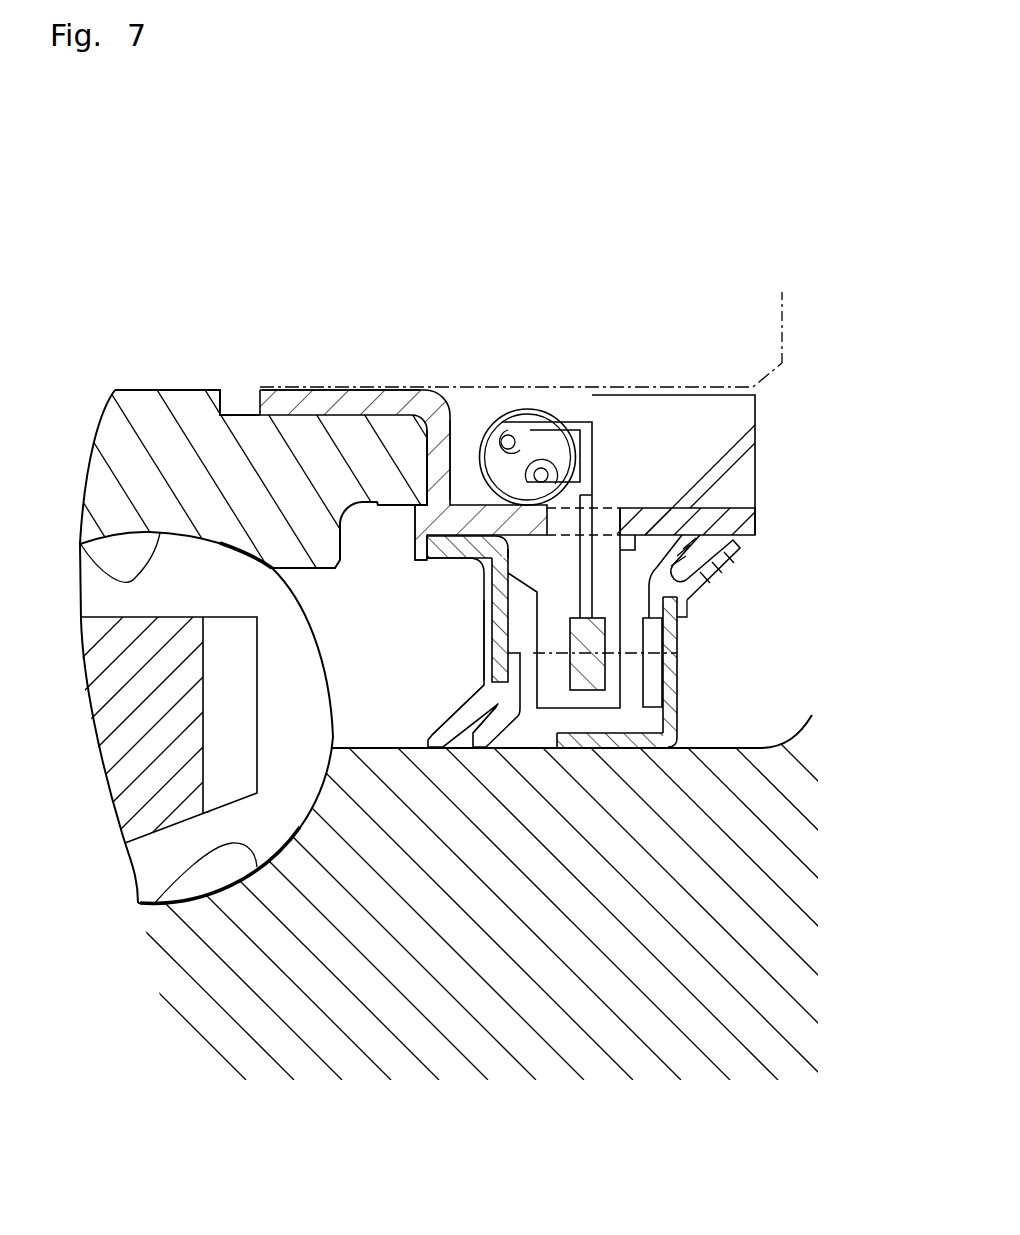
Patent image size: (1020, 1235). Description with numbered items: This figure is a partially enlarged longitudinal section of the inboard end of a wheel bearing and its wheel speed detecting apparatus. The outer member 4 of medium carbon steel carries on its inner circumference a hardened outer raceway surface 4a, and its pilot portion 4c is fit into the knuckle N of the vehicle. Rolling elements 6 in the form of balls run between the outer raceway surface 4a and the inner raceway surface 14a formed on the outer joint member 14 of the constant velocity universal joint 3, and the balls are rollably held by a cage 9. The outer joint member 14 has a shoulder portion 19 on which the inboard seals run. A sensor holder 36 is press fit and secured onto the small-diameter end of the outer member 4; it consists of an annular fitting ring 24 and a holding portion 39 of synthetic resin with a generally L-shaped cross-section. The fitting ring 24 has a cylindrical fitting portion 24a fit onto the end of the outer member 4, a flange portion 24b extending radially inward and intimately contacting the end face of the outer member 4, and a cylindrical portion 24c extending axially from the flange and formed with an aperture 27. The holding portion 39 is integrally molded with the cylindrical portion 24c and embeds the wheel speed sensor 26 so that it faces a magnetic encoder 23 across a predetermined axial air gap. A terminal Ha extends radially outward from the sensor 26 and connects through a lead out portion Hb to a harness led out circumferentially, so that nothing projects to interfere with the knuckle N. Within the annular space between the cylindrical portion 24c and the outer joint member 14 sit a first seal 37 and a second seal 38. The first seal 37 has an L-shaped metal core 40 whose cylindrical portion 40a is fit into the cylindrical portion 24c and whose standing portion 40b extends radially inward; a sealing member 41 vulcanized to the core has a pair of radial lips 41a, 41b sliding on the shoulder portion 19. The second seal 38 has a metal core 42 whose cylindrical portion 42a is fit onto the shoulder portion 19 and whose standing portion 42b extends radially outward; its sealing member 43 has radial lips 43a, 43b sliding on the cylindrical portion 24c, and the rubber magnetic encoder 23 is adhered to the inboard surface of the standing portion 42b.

The constant velocity universal joint 3 is at (715, 380).
The knuckle N is at (760, 353).
The outer member 4 is at (128, 405).
The outer raceway surface 4a is at (80, 543).
The pilot portion 4c is at (167, 388).
The rolling elements 6 is at (137, 598).
The cage 9 is at (235, 738).
The outer joint member 14 is at (292, 1040).
The inner raceway surface 14a is at (158, 904).
The shoulder portion 19 is at (665, 958).
The magnetic encoder 23 is at (650, 695).
The fitting ring 24 is at (384, 345).
The fitting portion 24a is at (318, 392).
The flange portion 24b is at (443, 467).
The cylindrical portion 24c is at (710, 525).
The wheel speed sensor 26 is at (577, 673).
The aperture 27 is at (427, 530).
The sensor holder 36 is at (547, 233).
The first seal 37 is at (448, 673).
The second seal 38 is at (748, 645).
The holding portion 39 is at (490, 410).
The metal core 40 is at (365, 598).
The cylindrical portion 40a is at (453, 550).
The standing portion 40b is at (500, 603).
The sealing member 41 is at (412, 935).
The radial lip 41a is at (440, 737).
The radial lip 41b is at (485, 733).
The metal core 42 is at (840, 692).
The cylindrical portion 42a is at (605, 745).
The standing portion 42b is at (670, 682).
The sealing member 43 is at (845, 548).
The radial lip 43a is at (740, 548).
The radial lip 43b is at (703, 570).
The terminal Ha is at (583, 498).
The lead out portion Hb is at (535, 448).